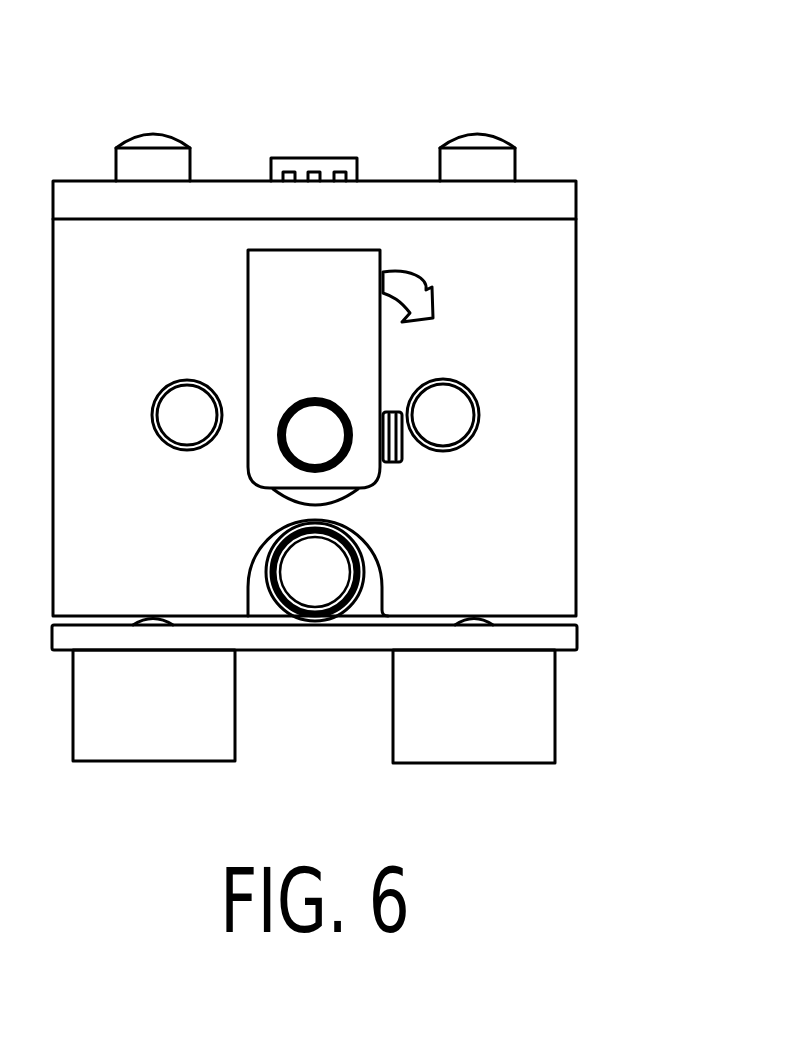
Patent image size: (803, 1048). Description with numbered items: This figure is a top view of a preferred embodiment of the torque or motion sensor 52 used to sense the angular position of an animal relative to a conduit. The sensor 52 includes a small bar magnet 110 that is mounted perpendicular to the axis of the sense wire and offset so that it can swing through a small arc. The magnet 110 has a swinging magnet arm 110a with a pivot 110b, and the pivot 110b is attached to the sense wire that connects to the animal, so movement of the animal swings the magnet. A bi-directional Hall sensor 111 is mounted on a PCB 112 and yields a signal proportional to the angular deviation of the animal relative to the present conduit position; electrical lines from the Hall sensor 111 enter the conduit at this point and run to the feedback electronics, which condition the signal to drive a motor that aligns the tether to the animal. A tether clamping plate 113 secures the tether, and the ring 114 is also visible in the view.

The torque or motion sensor 52 is at (640, 318).
The magnet 110 is at (247, 282).
The swinging magnet arm 110a is at (246, 383).
The pivot 110b is at (253, 478).
The bi-directional Hall sensor 111 is at (335, 157).
The PCB 112 is at (63, 181).
The tether clamping plate 113 is at (260, 650).
The grommet ring 114 is at (350, 580).